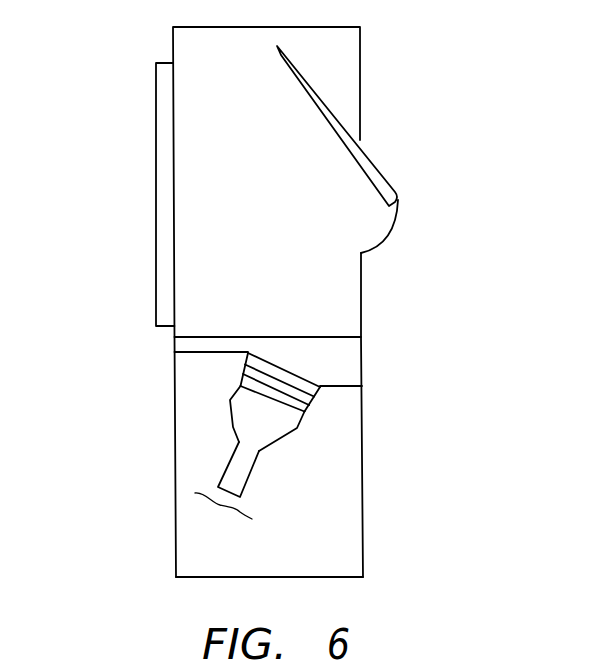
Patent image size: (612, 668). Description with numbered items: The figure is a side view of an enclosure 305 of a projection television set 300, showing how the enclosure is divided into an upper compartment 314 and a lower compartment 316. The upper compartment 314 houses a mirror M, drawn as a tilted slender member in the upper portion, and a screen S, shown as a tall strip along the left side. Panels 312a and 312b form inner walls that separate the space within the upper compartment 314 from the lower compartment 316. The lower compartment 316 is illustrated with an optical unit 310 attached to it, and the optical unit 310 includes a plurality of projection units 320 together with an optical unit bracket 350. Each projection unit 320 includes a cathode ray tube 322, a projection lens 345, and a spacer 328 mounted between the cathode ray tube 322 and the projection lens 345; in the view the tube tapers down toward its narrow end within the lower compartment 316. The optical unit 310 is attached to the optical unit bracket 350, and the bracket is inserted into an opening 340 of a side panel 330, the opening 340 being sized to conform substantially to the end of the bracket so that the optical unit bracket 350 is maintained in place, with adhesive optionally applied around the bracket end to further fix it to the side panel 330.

The projection television set 300 is at (62, 123).
The enclosure 305 is at (392, 140).
The mirror M is at (325, 115).
The screen S is at (156, 228).
The upper compartment 314 is at (192, 49).
The lower compartment 316 is at (175, 448).
The panel 312a is at (211, 352).
The panel 312b is at (342, 385).
The optical unit bracket 350 is at (272, 372).
The projection lens 345 is at (246, 377).
The opening 340 is at (315, 387).
The spacer 328 is at (306, 408).
The optical unit 310 is at (201, 421).
The cathode ray tube 322 is at (260, 438).
The projection unit 320 is at (223, 517).
The side panel 330 is at (347, 557).